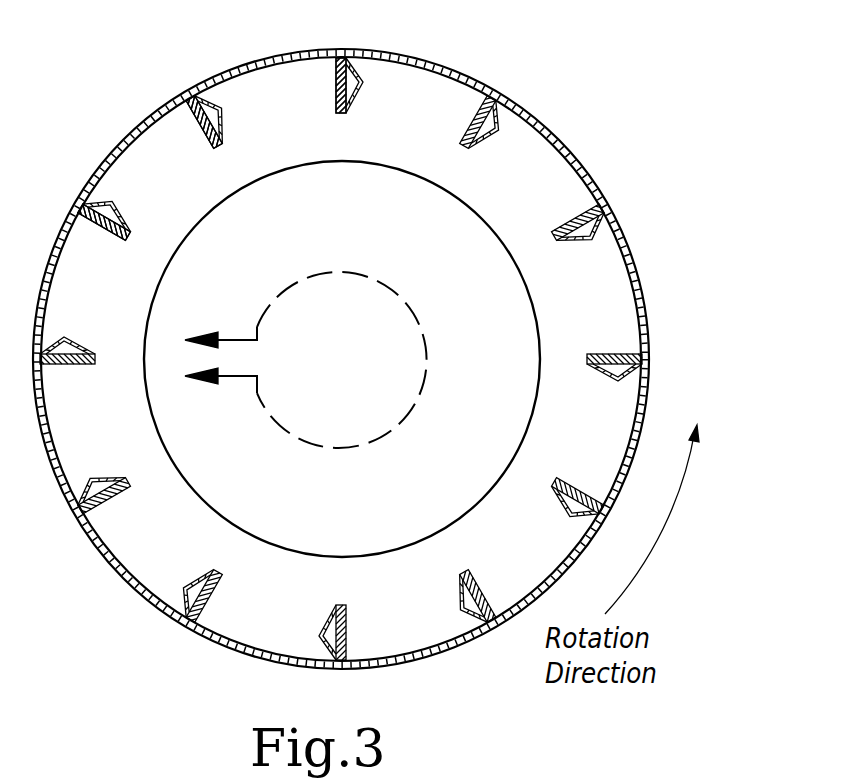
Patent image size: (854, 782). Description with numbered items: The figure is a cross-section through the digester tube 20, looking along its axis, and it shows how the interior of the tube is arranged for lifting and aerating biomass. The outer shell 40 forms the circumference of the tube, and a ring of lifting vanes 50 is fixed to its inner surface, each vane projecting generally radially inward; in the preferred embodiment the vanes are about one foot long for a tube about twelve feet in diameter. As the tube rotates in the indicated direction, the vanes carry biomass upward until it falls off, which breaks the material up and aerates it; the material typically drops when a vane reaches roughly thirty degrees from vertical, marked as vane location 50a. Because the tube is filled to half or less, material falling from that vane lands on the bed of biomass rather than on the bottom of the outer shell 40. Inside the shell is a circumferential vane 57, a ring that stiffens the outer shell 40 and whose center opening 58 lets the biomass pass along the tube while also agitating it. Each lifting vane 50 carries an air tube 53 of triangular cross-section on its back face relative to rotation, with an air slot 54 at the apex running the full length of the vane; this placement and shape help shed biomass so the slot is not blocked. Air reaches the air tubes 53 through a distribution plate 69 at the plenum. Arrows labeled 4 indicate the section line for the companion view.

The digester tube 20 is at (372, 338).
The outer shell 40 is at (415, 61).
The lifting vanes 50 is at (105, 245).
The vane location 50a is at (586, 220).
The air tube 53 is at (99, 198).
The air slot 54 is at (118, 202).
The circumferential vanes 57 is at (562, 305).
The center opening 58 is at (522, 281).
The distribution plate 69 is at (327, 519).
The section line 4- 4 is at (221, 362).